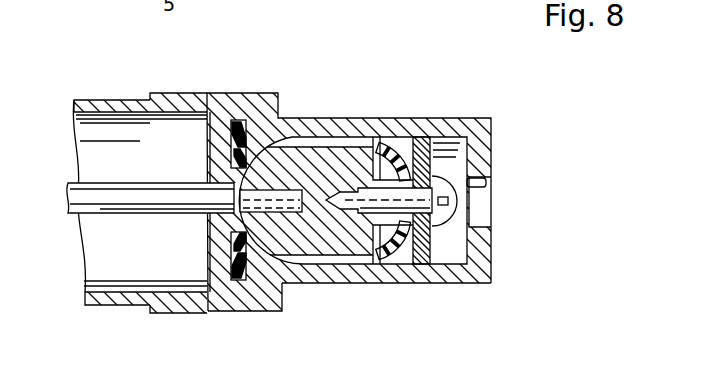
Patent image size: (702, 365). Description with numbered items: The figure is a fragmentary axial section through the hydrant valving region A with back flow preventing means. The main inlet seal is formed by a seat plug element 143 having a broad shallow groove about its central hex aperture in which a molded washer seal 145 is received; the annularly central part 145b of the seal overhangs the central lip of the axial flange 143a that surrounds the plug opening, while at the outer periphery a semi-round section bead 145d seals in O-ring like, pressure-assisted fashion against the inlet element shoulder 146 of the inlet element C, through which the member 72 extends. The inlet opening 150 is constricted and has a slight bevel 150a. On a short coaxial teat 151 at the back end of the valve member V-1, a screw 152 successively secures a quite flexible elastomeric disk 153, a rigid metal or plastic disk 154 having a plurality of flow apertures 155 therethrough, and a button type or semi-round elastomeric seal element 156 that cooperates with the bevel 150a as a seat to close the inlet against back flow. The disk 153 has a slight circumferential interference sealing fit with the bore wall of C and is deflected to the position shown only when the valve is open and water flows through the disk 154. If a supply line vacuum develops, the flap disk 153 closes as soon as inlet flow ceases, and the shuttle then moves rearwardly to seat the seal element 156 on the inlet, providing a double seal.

The tube assembly A is at (108, 99).
The inlet element C is at (153, 92).
The inner rod 72 is at (115, 183).
The seat plug element 143 is at (211, 114).
The axial flange 143a is at (236, 172).
The molded washer seal 145 is at (230, 143).
The annularly central part 145b is at (276, 92).
The semi-round section bead 145d is at (247, 311).
The inlet element shoulder 146 is at (240, 140).
The valve member V-1 is at (342, 156).
The inlet opening 150 is at (482, 200).
The bevel 150a is at (486, 182).
The coaxial teat 151 is at (380, 268).
The screw 152 is at (458, 168).
The flexible elastomeric disk 153 is at (381, 148).
The rigid disk 154 is at (418, 137).
The flow apertures 155 is at (468, 284).
The elastomeric seal element 156 is at (430, 178).